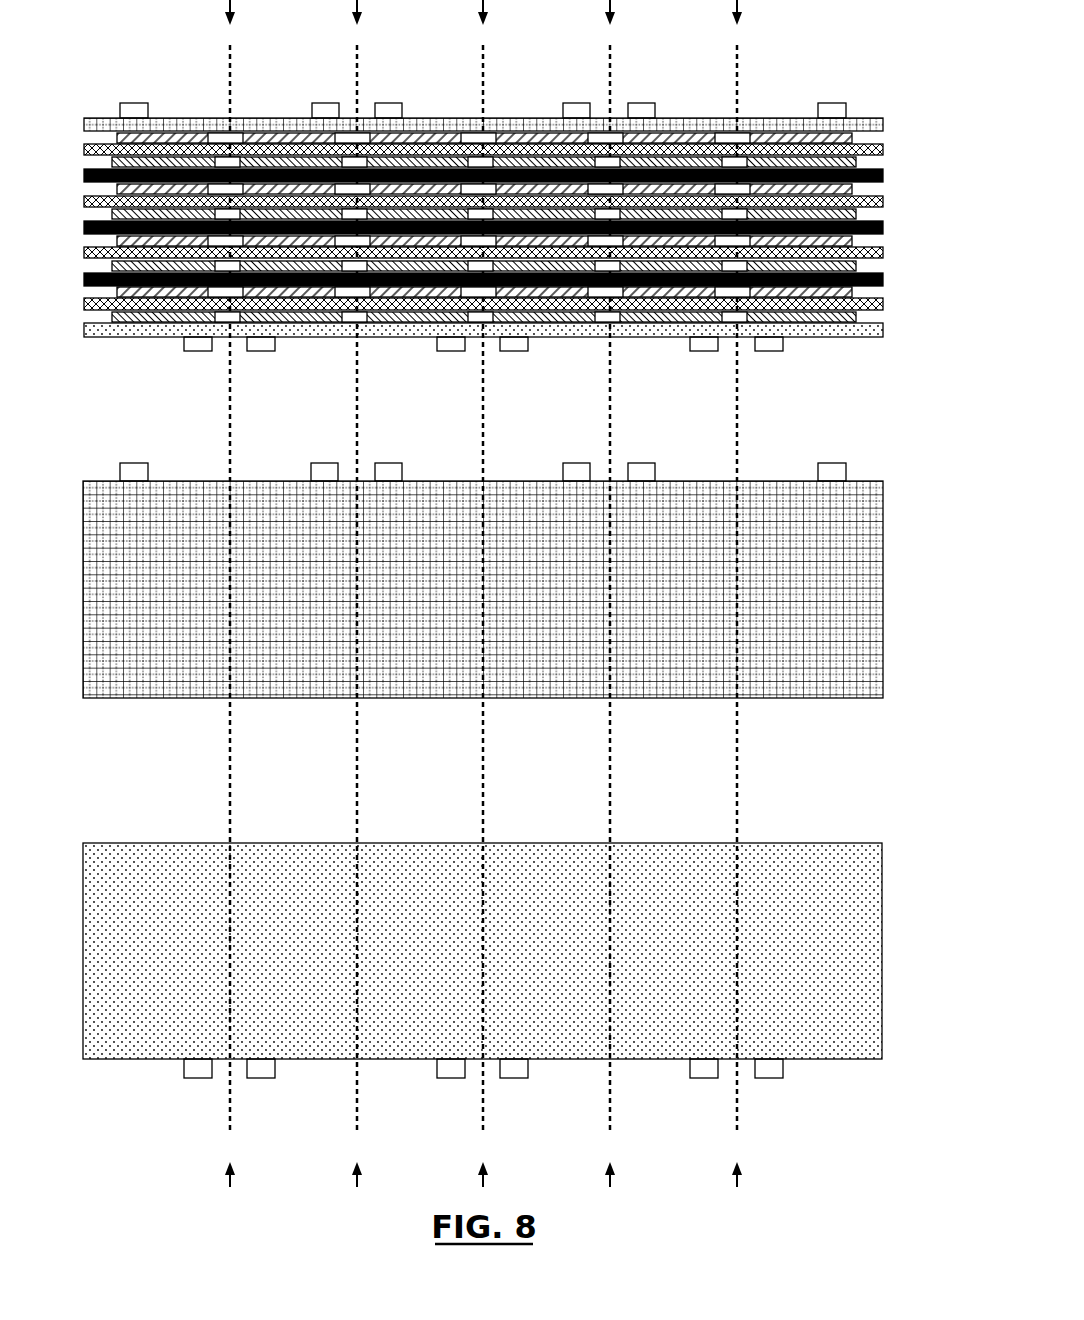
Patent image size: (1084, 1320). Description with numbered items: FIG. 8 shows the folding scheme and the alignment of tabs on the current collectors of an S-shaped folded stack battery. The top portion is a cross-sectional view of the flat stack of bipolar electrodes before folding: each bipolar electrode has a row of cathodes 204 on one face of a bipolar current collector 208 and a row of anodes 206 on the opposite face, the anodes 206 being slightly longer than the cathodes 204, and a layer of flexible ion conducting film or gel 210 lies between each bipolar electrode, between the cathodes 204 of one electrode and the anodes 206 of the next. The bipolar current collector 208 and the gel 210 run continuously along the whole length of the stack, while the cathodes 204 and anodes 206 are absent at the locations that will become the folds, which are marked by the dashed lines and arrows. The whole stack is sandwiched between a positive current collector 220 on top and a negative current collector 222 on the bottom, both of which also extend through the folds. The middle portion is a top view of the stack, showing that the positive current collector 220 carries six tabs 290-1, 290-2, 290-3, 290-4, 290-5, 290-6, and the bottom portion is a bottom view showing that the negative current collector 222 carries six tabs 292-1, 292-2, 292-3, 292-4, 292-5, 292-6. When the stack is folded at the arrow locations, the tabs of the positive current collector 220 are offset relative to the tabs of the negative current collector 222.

The positive current collector 220 is at (884, 121).
The cathodes 204 is at (852, 137).
The flexible ion conducting film (gel) 210 is at (883, 198).
The anodes 206 is at (856, 268).
The bipolar current collector 208 is at (883, 225).
The negative current collector 222 is at (883, 327).
The tab 290-1 is at (143, 103).
The tab 290-2 is at (328, 103).
The tab 290-3 is at (388, 103).
The tab 290-4 is at (580, 103).
The tab 290-5 is at (643, 103).
The tab 290-6 is at (833, 103).
The tab 292-1 is at (197, 351).
The tab 292-2 is at (263, 351).
The tab 292-3 is at (450, 351).
The tab 292-4 is at (517, 351).
The tab 292-5 is at (705, 351).
The tab 292-6 is at (776, 351).